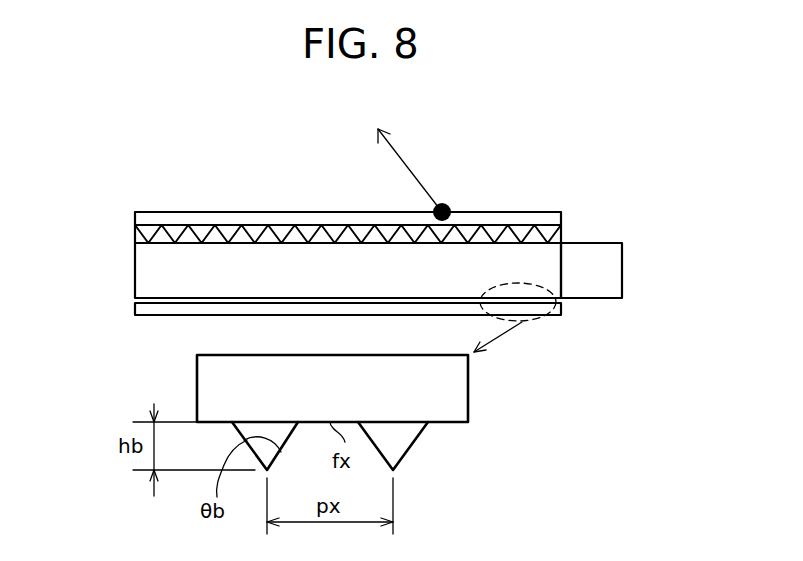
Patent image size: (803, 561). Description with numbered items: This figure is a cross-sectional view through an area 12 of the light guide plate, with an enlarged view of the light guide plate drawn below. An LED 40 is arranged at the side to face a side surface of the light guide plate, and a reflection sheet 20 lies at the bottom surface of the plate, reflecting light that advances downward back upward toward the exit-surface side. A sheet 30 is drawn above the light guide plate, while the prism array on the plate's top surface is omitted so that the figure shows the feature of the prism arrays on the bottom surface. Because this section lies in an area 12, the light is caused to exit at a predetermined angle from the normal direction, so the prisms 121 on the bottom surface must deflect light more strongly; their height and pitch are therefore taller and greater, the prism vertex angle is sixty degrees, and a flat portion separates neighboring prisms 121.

The prism sheet / optical sheet 30 is at (218, 212).
The area 12 is at (203, 285).
The reflection sheet 20 is at (148, 315).
The LED 40 is at (592, 243).
The prism 121 is at (418, 435).